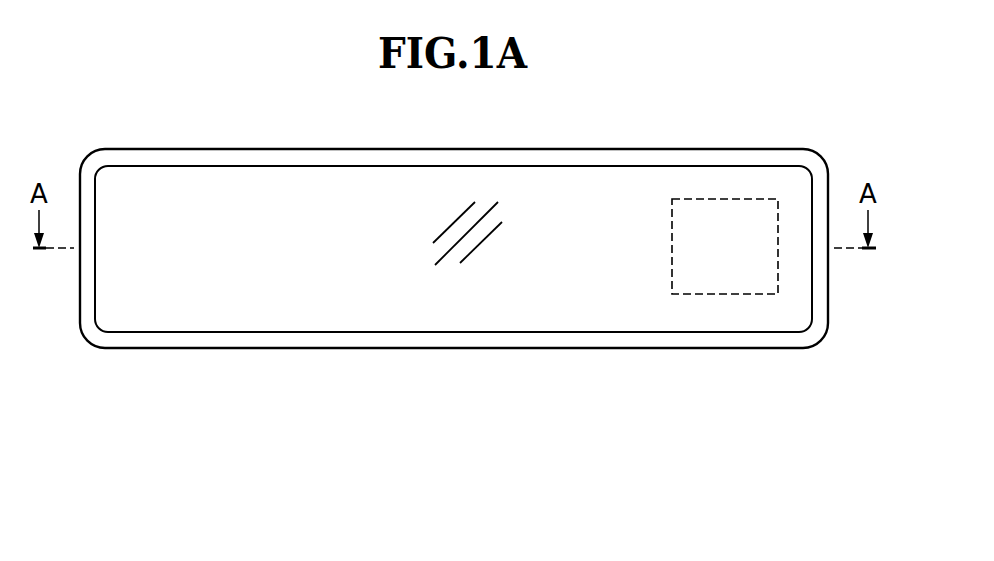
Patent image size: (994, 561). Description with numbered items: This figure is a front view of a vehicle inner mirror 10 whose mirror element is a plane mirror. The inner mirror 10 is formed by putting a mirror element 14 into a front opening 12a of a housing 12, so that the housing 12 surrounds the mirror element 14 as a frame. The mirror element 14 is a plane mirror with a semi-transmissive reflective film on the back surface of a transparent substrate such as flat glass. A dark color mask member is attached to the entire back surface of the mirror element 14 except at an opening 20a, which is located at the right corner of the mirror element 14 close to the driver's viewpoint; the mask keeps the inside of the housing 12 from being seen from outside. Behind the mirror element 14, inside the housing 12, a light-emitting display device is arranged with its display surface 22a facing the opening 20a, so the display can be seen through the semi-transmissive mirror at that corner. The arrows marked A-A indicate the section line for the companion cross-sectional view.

The inner mirror 10 is at (778, 81).
The housing 12 is at (595, 148).
The front opening 12a is at (812, 282).
The mirror element 14 is at (276, 318).
The opening 20a is at (672, 268).
The display surface 22a is at (740, 277).